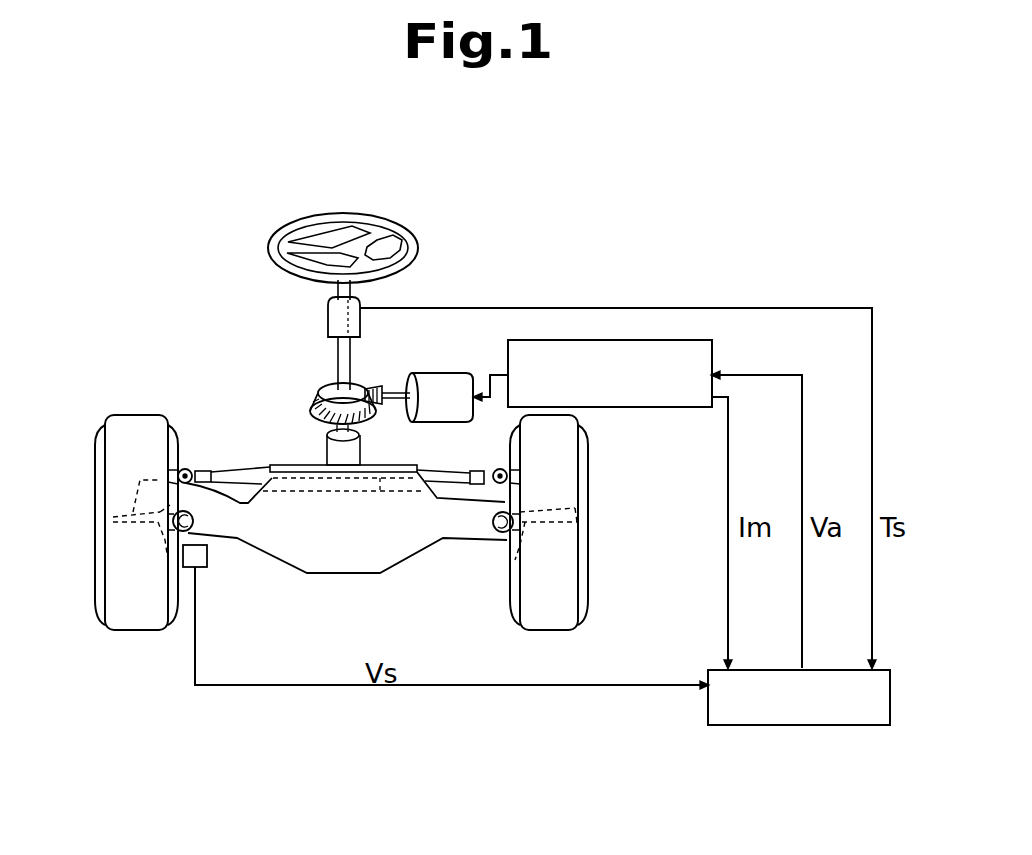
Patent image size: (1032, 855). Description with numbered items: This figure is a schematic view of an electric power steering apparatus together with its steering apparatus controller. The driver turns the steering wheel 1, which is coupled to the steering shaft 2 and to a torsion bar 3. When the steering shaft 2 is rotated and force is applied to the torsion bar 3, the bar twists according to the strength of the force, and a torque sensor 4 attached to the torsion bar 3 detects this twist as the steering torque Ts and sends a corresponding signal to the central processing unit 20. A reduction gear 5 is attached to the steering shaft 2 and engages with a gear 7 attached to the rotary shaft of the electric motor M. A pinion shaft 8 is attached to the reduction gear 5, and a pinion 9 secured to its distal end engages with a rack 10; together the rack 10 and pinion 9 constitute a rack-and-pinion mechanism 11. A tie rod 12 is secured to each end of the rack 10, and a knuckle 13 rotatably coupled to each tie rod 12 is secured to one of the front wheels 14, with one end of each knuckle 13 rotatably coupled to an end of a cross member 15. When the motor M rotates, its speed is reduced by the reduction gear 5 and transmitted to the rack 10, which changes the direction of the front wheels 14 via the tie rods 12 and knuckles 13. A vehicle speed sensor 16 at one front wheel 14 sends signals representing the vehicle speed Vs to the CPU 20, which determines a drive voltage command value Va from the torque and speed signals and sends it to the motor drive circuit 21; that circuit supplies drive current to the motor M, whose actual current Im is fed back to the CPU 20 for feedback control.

The steering wheel 1 is at (415, 236).
The steering shaft 2 is at (362, 297).
The torsion bar 3 is at (325, 308).
The torque sensor 4 is at (328, 320).
The reduction gear 5 is at (320, 392).
The gear 7 is at (372, 386).
The pinion shaft 8 is at (364, 455).
The pinion 9 is at (373, 483).
The rack 10 is at (290, 493).
The rack-and-pinion mechanism 11 is at (240, 465).
The tie rod 12 is at (200, 470).
The knuckle 13 is at (128, 512).
The front wheel 14 is at (95, 481).
The cross member 15 is at (278, 560).
The vehicle speed sensor 16 is at (212, 568).
The central processing unit (CPU) 20 is at (708, 670).
The motor drive circuit 21 is at (713, 352).
The electric motor M is at (450, 422).